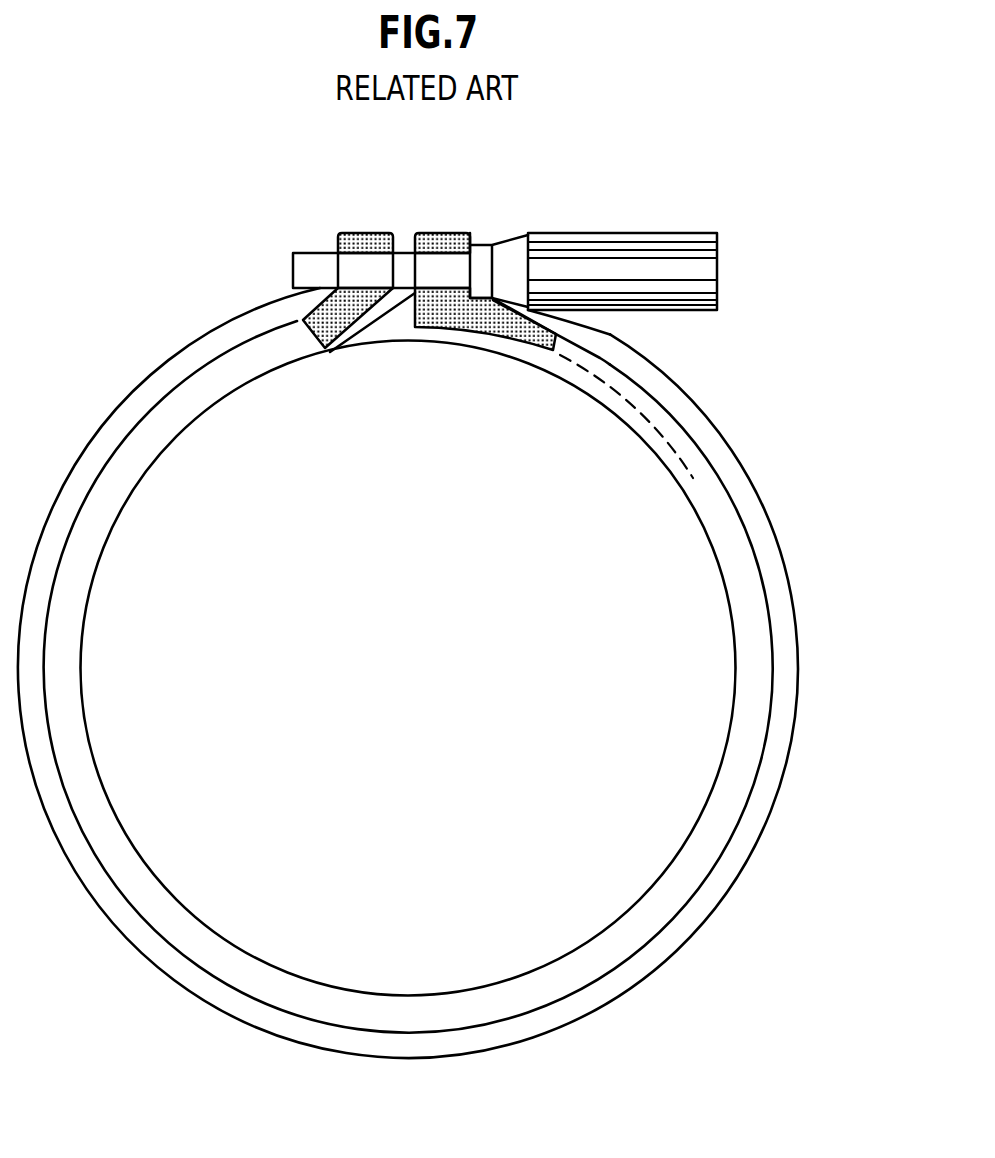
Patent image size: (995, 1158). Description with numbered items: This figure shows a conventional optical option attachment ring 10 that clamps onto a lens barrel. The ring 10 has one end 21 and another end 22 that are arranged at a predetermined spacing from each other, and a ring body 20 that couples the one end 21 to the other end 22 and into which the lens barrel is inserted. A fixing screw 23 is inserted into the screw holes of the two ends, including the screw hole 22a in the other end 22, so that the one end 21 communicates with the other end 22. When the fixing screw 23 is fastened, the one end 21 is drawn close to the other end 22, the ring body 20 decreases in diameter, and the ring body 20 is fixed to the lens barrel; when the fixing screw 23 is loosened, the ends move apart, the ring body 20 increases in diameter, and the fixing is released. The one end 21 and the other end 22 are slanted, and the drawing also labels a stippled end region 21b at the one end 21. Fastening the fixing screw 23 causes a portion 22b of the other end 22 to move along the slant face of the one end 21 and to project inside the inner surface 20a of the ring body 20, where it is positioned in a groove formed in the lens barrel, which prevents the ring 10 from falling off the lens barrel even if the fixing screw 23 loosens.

The optical option attachment ring 10 is at (820, 228).
The ring body 20 is at (913, 617).
The inner surface of the ring body 20a is at (693, 503).
The one end 21 is at (399, 146).
The first band end portion 21b is at (352, 288).
The other end 22 is at (437, 288).
The screw hole 22a is at (445, 288).
The portion of the other end 22b is at (447, 378).
The fixing screw 23 is at (628, 258).